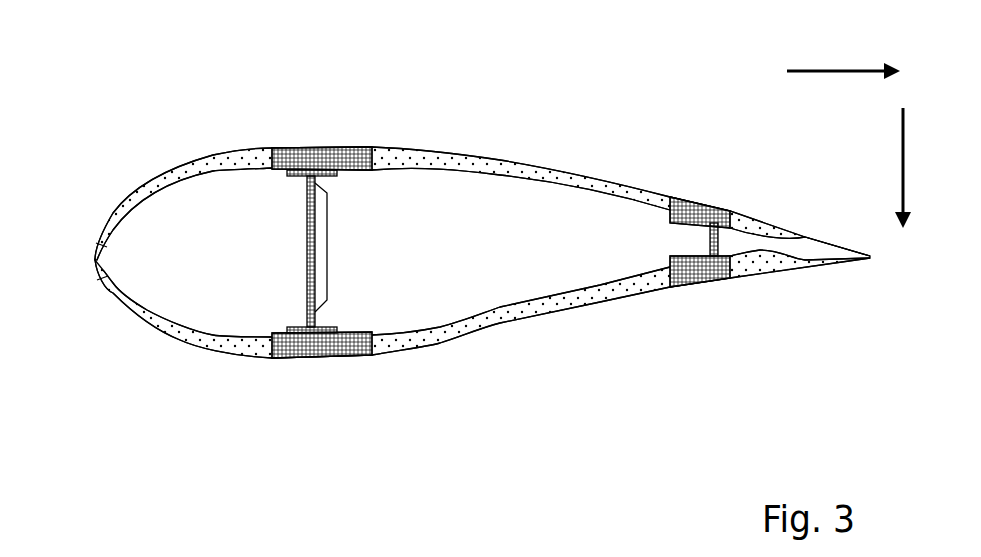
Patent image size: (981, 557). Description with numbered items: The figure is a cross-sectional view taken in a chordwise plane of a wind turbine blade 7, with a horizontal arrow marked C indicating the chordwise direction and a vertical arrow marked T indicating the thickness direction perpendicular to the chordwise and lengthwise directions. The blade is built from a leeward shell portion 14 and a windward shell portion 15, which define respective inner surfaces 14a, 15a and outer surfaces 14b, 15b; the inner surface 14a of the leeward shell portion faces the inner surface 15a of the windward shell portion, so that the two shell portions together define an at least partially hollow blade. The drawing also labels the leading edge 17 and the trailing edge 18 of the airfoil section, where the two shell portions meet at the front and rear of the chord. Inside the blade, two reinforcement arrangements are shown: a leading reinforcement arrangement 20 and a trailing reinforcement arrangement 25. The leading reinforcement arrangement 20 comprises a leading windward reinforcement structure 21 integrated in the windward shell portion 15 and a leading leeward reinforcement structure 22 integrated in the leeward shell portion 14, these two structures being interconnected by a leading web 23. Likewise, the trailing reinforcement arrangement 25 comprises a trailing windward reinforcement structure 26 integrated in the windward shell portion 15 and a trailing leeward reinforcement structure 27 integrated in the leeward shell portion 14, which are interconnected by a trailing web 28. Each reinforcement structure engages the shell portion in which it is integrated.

The wind turbine blade 7 is at (660, 150).
The leeward shell portion 14 is at (482, 177).
The inner surface of the leeward shell portion 14a is at (216, 185).
The outer surface of the leeward shell portion 14b is at (204, 156).
The windward shell portion 15 is at (482, 345).
The inner surface of the windward shell portion 15a is at (202, 321).
The outer surface of the windward shell portion 15b is at (208, 358).
The leading edge 17 is at (93, 268).
The trailing edge 18 is at (870, 263).
The leading reinforcement arrangement 20 is at (323, 288).
The leading windward reinforcement structure 21 is at (306, 362).
The leading leeward reinforcement structure 22 is at (335, 148).
The leading web 23 is at (303, 220).
The trailing reinforcement arrangement 25 is at (736, 289).
The trailing windward reinforcement structure 26 is at (693, 282).
The trailing leeward reinforcement structure 27 is at (700, 200).
The trailing web 28 is at (721, 239).